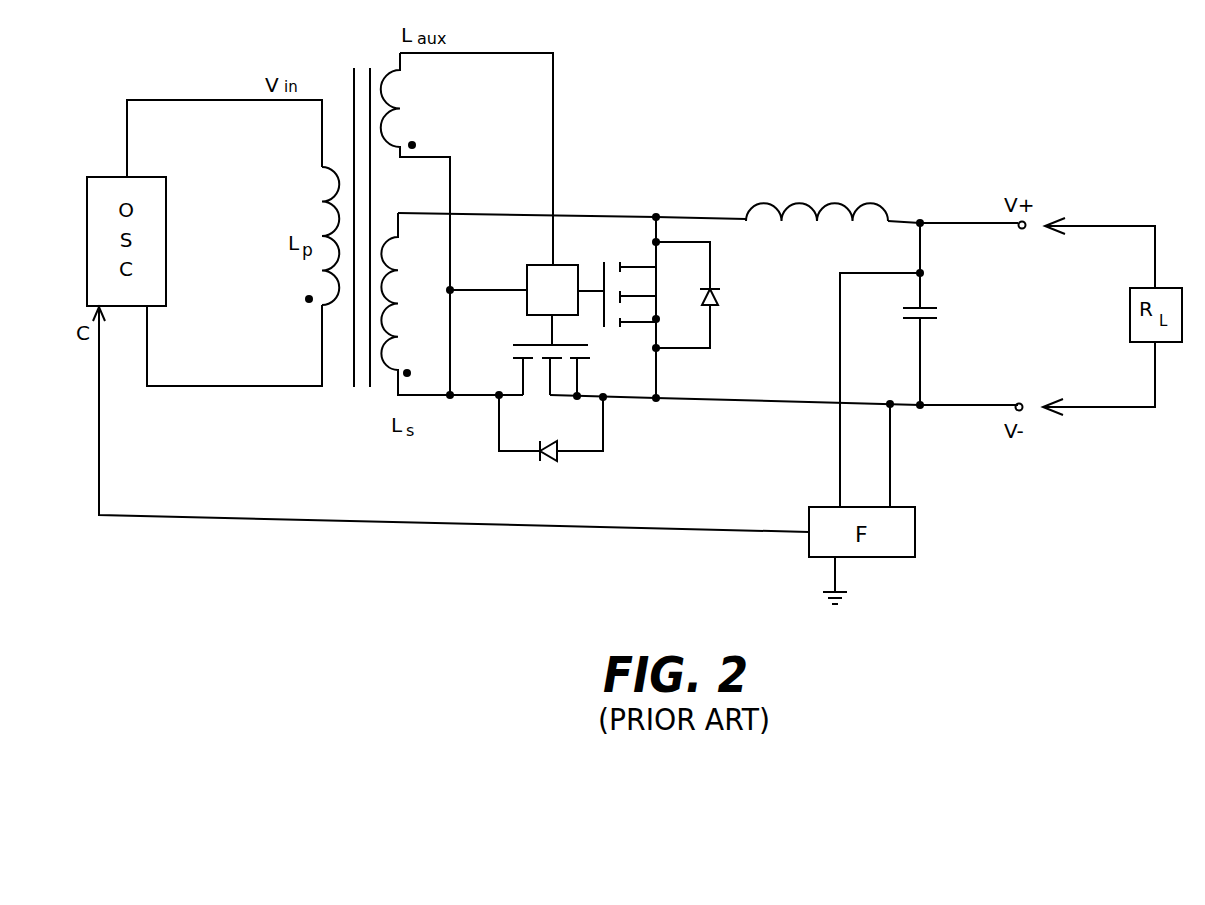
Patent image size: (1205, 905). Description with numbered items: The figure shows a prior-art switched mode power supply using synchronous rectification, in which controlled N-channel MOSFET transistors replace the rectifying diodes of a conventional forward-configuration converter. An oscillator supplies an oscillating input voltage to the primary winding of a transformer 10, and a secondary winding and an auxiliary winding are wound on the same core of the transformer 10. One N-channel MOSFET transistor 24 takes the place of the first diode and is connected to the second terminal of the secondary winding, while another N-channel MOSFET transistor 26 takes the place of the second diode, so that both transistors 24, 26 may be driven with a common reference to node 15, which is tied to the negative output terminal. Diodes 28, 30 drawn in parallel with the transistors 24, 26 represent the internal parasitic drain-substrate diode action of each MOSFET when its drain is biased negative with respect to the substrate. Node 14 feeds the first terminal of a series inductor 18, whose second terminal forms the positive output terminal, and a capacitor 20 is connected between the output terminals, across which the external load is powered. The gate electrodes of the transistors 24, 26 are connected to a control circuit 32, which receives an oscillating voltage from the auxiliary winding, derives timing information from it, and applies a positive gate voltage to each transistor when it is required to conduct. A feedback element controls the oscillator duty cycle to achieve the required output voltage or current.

The transformer 10 is at (353, 65).
The node 14 is at (657, 213).
The node 15 is at (656, 401).
The series inductor 18 is at (873, 203).
The capacitor 20 is at (936, 313).
The N-channel MOSFET transistor 24 is at (513, 350).
The N-channel MOSFET transistor 26 is at (613, 327).
The diode 28 is at (545, 461).
The diode 30 is at (720, 298).
The control circuit 32 is at (572, 263).